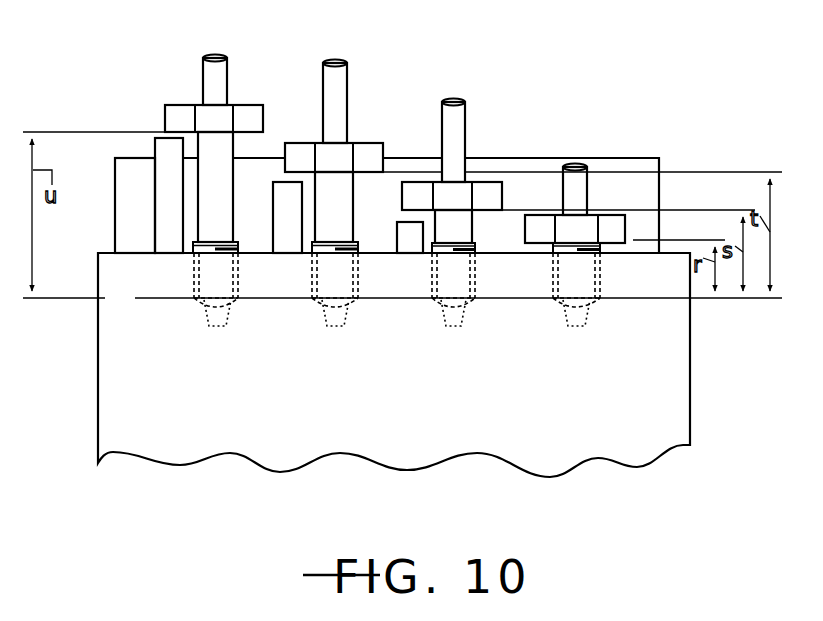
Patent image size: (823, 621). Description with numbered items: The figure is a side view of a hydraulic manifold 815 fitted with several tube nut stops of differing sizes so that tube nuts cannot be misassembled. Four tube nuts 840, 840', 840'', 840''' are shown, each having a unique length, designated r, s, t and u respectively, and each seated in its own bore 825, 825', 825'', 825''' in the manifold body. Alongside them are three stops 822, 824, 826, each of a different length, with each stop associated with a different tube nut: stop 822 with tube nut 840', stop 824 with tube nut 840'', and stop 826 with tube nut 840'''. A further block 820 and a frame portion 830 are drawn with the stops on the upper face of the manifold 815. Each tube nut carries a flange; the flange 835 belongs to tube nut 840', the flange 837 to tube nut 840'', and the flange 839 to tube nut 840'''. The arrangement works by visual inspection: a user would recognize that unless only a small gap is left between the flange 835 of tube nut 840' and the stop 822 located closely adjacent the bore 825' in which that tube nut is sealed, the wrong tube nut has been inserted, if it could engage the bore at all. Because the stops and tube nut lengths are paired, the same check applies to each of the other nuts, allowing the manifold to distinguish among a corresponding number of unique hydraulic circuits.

The substrate block 815 is at (98, 362).
The first spacer block 820 is at (115, 182).
The stop 826 is at (168, 247).
The stop 824 is at (288, 245).
The stop 822 is at (410, 240).
The support frame 830 is at (613, 227).
The flange 835 is at (488, 195).
The head of pin 840'' 837 is at (368, 155).
The head of pin 840''' 839 is at (250, 118).
The tube nut 840 is at (577, 182).
The tube nut 840' is at (466, 164).
The tube nut 840'' is at (340, 133).
The tube nut 840''' is at (224, 133).
The hole 825 is at (575, 321).
The bore 825' is at (454, 327).
The hole 825'' is at (330, 327).
The hole 825''' is at (218, 328).